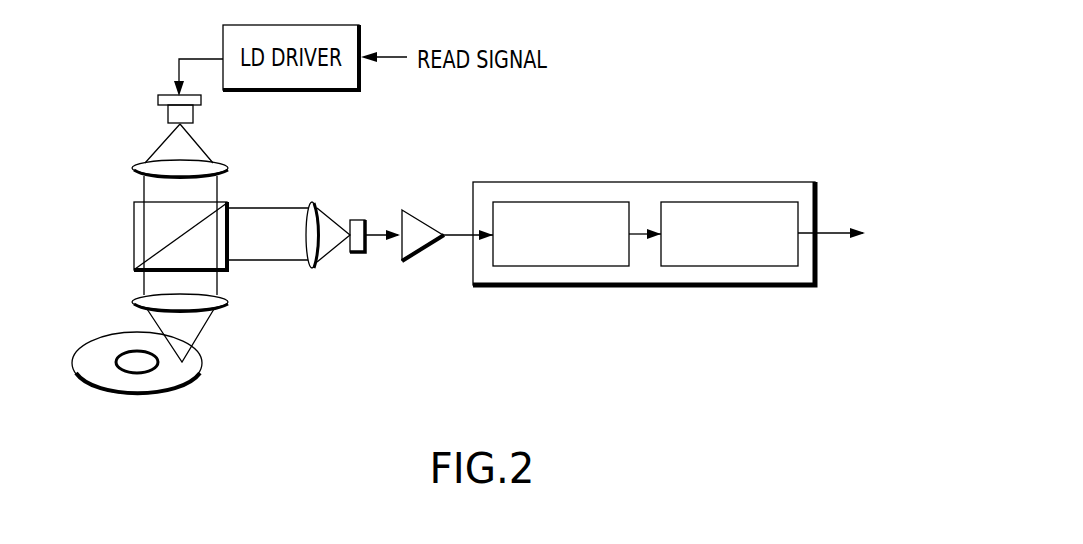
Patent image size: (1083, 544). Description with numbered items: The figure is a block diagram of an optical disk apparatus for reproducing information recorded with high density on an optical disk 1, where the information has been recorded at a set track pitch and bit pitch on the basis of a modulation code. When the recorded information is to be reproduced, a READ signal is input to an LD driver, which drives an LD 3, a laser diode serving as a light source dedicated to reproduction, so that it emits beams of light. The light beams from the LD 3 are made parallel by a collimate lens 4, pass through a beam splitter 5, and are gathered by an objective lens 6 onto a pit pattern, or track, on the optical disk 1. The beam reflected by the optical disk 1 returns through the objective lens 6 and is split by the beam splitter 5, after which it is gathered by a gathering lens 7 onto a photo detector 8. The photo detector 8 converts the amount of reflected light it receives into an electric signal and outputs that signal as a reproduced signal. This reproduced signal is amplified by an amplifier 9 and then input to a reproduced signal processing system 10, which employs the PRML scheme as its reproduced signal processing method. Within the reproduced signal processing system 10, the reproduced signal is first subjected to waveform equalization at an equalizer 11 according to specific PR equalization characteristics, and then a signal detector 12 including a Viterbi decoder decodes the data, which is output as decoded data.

The optical disk 1 is at (190, 373).
The LD (laser diode) 3 is at (160, 106).
The collimate lens 4 is at (140, 165).
The beam splitter 5 is at (137, 227).
The objective lens 6 is at (142, 298).
The gathering lens 7 is at (315, 203).
The photo detector 8 is at (362, 220).
The amplifier 9 is at (418, 220).
The reproduced signal processing system 10 is at (783, 183).
The equalizer 11 is at (592, 266).
The signal detector 12 is at (767, 266).